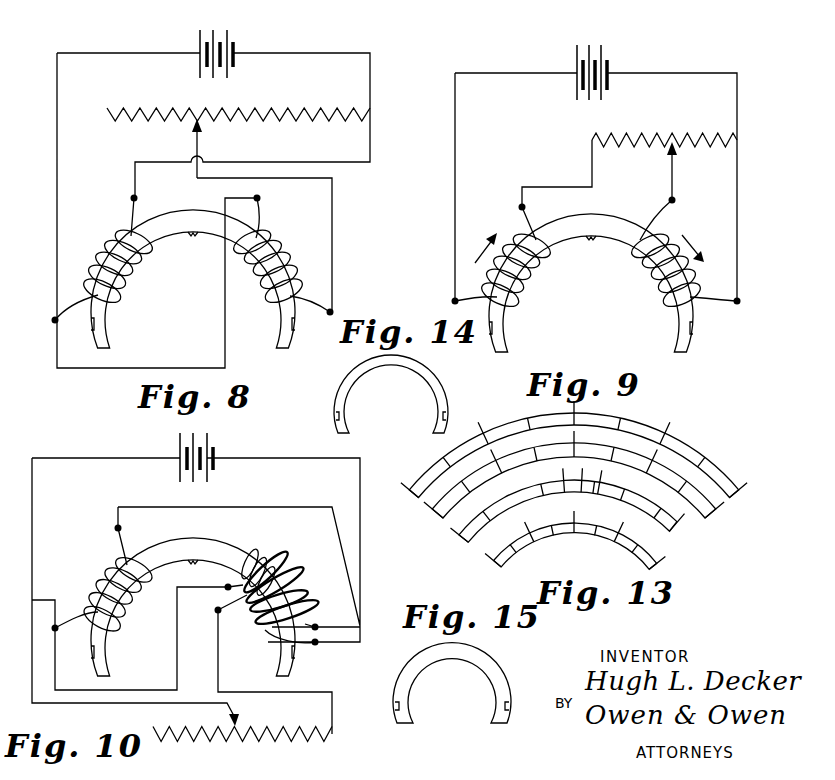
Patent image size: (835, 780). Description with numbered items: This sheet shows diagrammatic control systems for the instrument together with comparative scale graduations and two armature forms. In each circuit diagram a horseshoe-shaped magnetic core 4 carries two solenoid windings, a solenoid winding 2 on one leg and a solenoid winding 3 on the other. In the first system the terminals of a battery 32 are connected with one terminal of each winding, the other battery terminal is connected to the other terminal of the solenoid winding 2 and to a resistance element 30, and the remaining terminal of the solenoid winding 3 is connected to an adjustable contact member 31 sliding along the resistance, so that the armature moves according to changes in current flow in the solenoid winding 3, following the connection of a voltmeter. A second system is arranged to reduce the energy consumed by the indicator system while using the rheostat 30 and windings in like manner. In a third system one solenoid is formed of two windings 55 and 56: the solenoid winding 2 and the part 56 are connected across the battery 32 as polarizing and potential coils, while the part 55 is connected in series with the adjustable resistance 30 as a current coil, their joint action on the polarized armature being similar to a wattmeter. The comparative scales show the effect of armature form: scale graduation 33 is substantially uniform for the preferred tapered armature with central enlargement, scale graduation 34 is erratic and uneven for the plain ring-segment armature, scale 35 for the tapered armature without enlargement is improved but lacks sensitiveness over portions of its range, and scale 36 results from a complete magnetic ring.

In FIG. 8, the solenoid winding 2 is at (102, 245).
In FIG. 9, the solenoid winding 2 is at (527, 273).
In FIG. 10, the solenoid winding 2 is at (127, 615).
In FIG. 8, the solenoid winding 3 is at (291, 249).
In FIG. 9, the solenoid winding 3 is at (648, 270).
In FIG. 10, the solenoid winding 3 is at (271, 583).
In FIG. 8, the magnetic core 4 is at (207, 237).
In FIG. 9, the magnetic core 4 is at (613, 222).
In FIG. 10, the magnetic core 4 is at (224, 544).
In FIG. 8, the resistance element 30 is at (293, 108).
In FIG. 9, the resistance element 30 is at (652, 132).
In FIG. 10, the resistance element 30 is at (270, 731).
In FIG. 8, the adjustable contact member 31 is at (199, 132).
In FIG. 10, the adjustable contact member 31 is at (238, 712).
In FIG. 8, the battery 32 is at (235, 42).
In FIG. 10, the battery 32 is at (215, 438).
In FIG. 13, the scale graduation 33 is at (477, 566).
In FIG. 13, the scale graduation 34 is at (447, 541).
In FIG. 13, the scale 35 is at (426, 514).
In FIG. 13, the scale 36 is at (410, 487).
In FIG. 10, the winding part (current coil) 55 is at (293, 554).
In FIG. 10, the winding part (potential coil) 56 is at (254, 557).